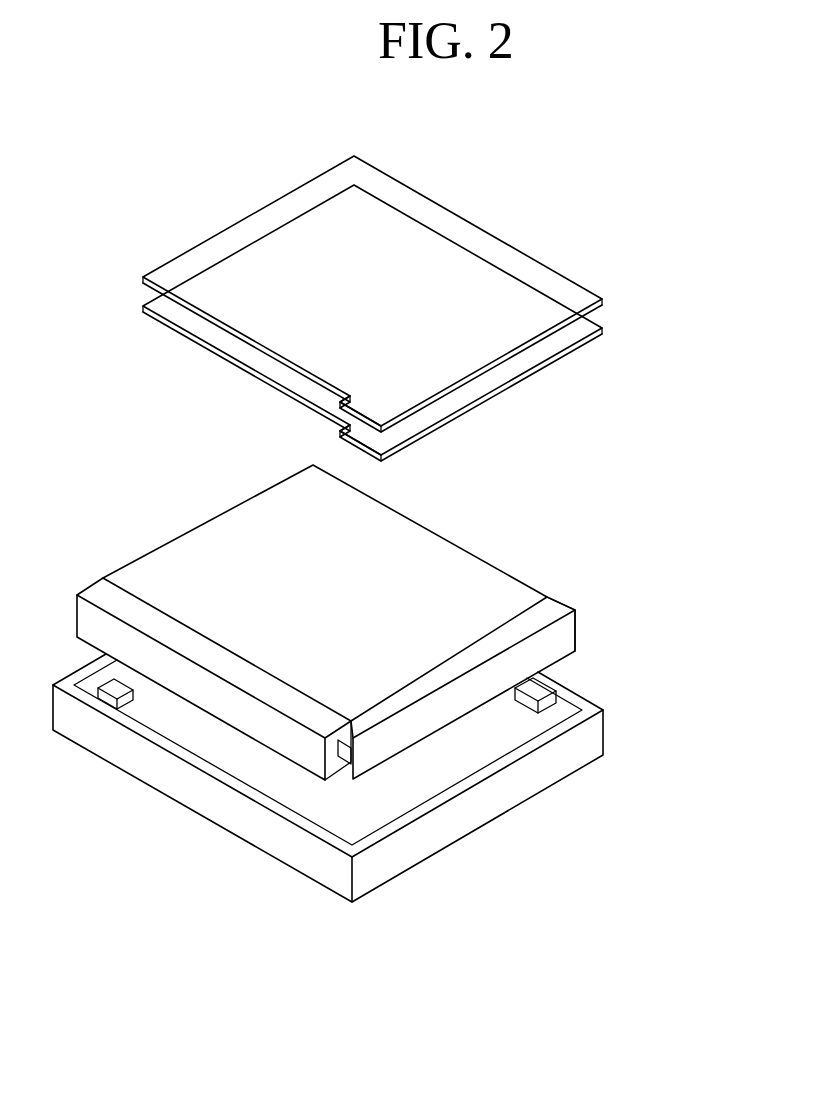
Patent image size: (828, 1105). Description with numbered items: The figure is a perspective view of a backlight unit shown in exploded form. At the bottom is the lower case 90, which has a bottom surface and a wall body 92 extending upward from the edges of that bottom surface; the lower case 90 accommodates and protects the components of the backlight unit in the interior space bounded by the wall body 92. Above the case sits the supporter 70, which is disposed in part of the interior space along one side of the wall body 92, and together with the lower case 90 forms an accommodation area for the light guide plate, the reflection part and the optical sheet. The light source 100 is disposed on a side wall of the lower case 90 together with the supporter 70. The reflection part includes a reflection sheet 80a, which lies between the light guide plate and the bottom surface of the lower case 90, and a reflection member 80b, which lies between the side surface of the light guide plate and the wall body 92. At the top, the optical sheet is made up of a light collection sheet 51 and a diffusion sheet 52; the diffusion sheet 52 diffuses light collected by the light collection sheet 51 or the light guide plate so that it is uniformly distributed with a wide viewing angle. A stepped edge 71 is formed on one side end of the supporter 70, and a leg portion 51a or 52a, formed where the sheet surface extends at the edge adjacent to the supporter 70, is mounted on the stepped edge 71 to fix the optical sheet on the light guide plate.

The light collection sheet 51 is at (578, 330).
The leg portion 51a is at (372, 409).
The diffusion sheet 52 is at (533, 283).
The leg portion 52a is at (378, 441).
The supporter 70 is at (197, 688).
The stepped edge 71 is at (352, 757).
The reflection sheet 80a is at (538, 603).
The reflection member 80b is at (560, 707).
The lower case 90 is at (565, 757).
The wall body 92 is at (190, 793).
The light source 100 is at (570, 605).